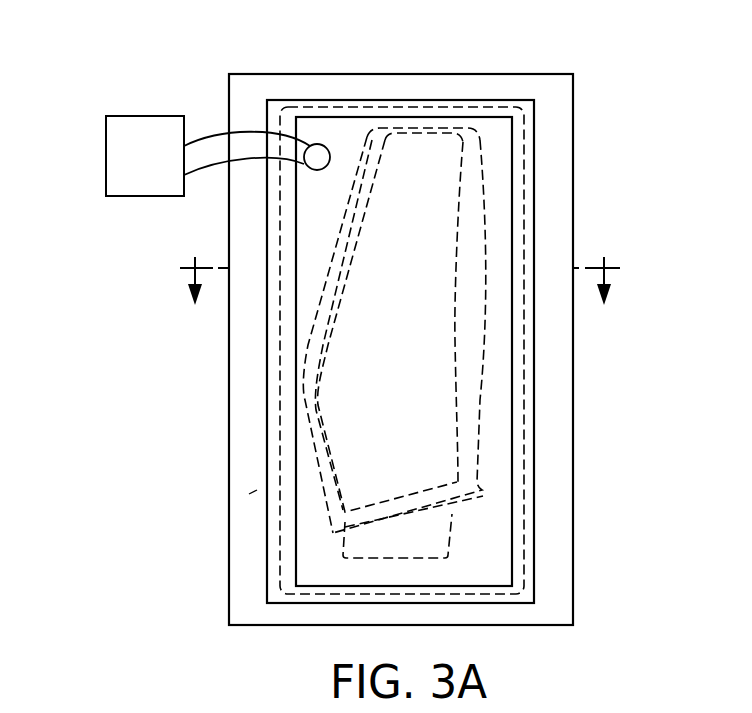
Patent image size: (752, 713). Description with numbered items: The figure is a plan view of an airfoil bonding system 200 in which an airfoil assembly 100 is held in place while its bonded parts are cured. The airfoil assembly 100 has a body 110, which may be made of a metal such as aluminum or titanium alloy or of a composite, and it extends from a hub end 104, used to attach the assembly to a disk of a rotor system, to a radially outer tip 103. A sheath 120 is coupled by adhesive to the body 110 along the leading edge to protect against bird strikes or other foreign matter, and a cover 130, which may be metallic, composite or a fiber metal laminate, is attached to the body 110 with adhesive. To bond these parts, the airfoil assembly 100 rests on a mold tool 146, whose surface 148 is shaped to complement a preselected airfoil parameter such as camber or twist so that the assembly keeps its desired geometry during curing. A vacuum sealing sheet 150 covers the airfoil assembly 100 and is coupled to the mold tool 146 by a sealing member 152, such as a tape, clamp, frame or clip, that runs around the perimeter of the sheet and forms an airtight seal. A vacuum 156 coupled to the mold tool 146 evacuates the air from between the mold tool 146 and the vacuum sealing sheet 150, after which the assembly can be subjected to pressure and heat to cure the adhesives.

The airfoil bonding system 200 is at (148, 78).
The airfoil assembly 100 is at (504, 148).
The tip 103 is at (428, 128).
The hub end 104 is at (453, 507).
The body 110 is at (475, 207).
The sheath 120 is at (315, 357).
The cover 130 is at (406, 353).
The mold tool 146 is at (228, 566).
The surface 148 is at (253, 492).
The vacuum sealing sheet 150 is at (496, 571).
The sealing member 152 is at (534, 441).
The vacuum 156 is at (159, 172).